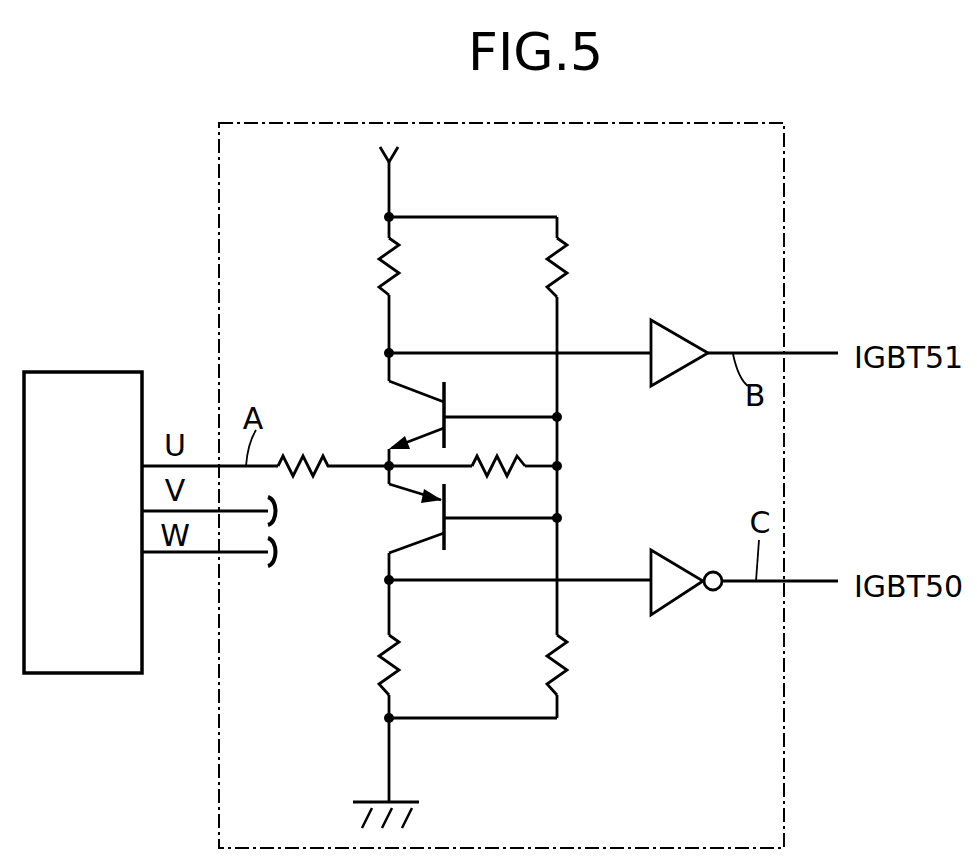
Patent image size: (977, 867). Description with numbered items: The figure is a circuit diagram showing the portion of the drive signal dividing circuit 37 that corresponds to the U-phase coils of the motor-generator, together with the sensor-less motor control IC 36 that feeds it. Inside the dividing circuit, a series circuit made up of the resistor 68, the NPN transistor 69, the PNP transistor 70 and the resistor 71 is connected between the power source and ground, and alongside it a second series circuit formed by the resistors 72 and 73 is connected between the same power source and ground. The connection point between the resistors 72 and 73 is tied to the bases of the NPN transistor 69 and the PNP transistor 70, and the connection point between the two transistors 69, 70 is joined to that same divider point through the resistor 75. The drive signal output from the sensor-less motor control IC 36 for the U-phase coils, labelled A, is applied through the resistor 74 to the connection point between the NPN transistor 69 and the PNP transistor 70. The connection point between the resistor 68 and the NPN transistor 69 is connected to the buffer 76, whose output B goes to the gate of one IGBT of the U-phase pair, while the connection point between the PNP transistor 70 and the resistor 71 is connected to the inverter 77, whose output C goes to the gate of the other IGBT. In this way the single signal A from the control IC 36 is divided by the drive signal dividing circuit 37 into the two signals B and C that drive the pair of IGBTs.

The sensor-less motor control IC 36 is at (65, 524).
The drive signal dividing circuit 37 is at (786, 238).
The resistor 68 is at (383, 263).
The NPN transistor 69 is at (445, 391).
The PNP transistor 70 is at (445, 540).
The resistor 71 is at (381, 670).
The resistor 72 is at (565, 270).
The resistor 73 is at (562, 665).
The resistor 74 is at (313, 475).
The resistor 75 is at (492, 469).
The buffer 76 is at (674, 332).
The inverter 77 is at (683, 597).